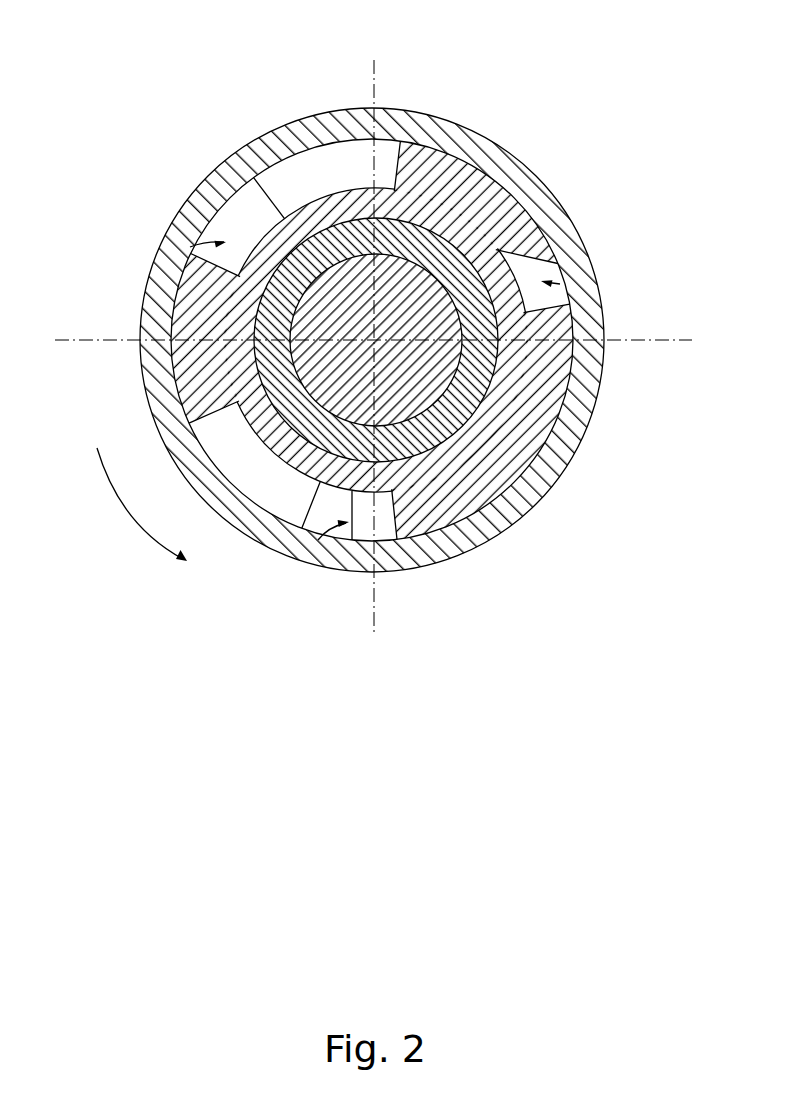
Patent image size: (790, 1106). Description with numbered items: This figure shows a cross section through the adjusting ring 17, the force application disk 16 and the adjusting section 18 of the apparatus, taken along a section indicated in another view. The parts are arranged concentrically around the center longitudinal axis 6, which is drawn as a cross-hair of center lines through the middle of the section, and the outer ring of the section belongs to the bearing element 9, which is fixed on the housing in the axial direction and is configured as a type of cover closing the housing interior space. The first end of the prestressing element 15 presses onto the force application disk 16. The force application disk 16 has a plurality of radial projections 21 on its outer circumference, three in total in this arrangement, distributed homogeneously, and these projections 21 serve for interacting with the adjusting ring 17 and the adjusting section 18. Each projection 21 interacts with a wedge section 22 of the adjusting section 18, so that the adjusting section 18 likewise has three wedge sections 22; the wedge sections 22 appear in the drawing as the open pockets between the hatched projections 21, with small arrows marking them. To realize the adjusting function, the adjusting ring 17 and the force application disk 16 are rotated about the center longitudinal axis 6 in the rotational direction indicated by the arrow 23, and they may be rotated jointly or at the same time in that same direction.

The center longitudinal axis 6 is at (376, 340).
The bearing element 9 is at (141, 365).
The prestressing element 15 is at (424, 224).
The force application disk 16 is at (322, 228).
The adjusting ring 17 is at (340, 157).
The adjusting section 18 is at (243, 230).
The radial projection 21 is at (198, 313).
The wedge section 22 is at (190, 247).
The arrow 23 is at (113, 498).